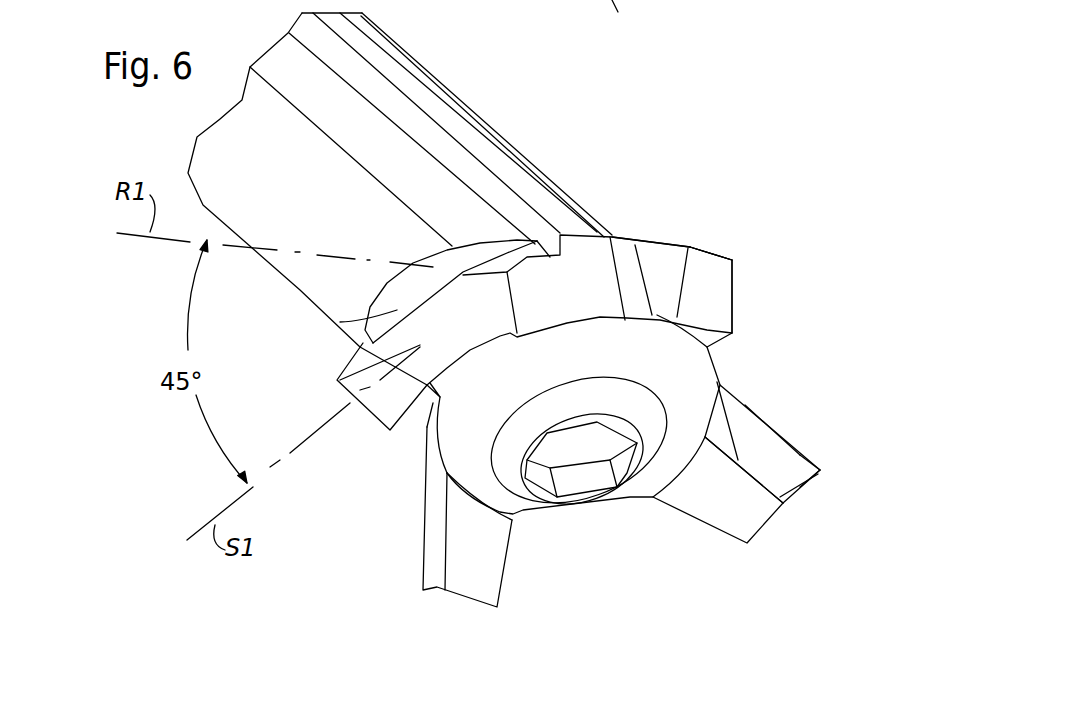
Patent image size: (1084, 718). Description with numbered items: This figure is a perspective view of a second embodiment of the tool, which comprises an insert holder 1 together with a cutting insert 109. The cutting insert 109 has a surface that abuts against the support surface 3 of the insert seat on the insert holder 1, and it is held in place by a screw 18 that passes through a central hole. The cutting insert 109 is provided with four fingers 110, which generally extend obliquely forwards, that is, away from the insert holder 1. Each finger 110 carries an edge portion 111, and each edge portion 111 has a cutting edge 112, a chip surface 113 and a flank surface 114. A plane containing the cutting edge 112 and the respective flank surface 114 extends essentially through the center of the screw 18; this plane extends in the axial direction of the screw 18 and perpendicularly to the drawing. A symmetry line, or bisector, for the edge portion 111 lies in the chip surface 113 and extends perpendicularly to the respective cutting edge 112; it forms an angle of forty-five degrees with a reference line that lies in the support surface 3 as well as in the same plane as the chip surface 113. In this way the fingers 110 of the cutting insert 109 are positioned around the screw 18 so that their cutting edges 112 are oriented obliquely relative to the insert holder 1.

The insert holder 1 is at (530, 125).
The support surface 3 is at (340, 322).
The screw 18 is at (578, 448).
The cutting insert 109 is at (548, 556).
The finger 110 is at (740, 303).
The edge portion 111 is at (690, 232).
The cutting edge 112 is at (688, 248).
The chip surface 113 is at (663, 260).
The flank surface 114 is at (723, 275).